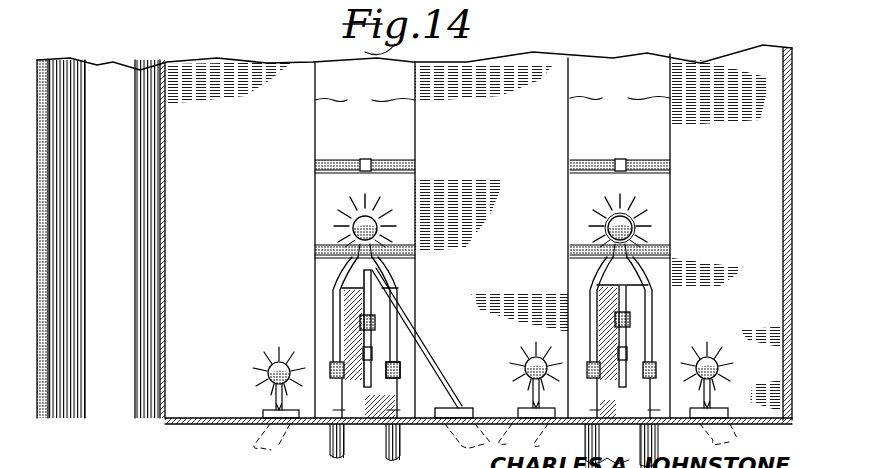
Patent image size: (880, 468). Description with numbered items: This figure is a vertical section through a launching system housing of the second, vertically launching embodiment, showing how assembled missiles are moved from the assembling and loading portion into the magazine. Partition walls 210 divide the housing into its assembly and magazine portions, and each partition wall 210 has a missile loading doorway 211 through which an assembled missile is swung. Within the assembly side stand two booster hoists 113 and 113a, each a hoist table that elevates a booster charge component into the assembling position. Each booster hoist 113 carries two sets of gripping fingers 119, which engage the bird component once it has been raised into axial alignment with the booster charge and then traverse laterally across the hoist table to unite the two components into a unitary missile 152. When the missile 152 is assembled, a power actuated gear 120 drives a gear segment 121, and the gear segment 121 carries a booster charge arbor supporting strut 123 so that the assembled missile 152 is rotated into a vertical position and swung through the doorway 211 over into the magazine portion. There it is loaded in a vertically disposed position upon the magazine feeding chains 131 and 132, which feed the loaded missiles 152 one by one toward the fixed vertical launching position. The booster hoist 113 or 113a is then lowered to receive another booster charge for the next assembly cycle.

The partition wall 210 is at (226, 158).
The missile loading doorway 211 is at (492, 101).
The magazine feeding chain 131 is at (338, 160).
The magazine feeding chain 132 is at (415, 257).
The booster charge arbor supporting strut 123 is at (400, 297).
The booster hoist 113 is at (378, 338).
The booster hoist 113a is at (630, 320).
The gripping fingers 119 is at (362, 317).
The gear segment 121 is at (400, 358).
The power actuated gear 120 is at (400, 375).
The unitary missile 152 is at (283, 356).